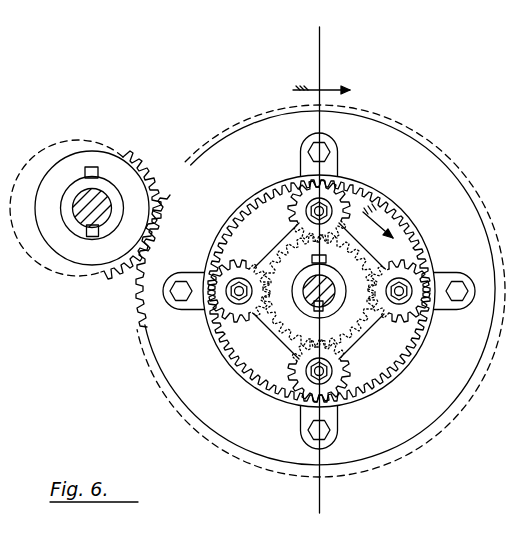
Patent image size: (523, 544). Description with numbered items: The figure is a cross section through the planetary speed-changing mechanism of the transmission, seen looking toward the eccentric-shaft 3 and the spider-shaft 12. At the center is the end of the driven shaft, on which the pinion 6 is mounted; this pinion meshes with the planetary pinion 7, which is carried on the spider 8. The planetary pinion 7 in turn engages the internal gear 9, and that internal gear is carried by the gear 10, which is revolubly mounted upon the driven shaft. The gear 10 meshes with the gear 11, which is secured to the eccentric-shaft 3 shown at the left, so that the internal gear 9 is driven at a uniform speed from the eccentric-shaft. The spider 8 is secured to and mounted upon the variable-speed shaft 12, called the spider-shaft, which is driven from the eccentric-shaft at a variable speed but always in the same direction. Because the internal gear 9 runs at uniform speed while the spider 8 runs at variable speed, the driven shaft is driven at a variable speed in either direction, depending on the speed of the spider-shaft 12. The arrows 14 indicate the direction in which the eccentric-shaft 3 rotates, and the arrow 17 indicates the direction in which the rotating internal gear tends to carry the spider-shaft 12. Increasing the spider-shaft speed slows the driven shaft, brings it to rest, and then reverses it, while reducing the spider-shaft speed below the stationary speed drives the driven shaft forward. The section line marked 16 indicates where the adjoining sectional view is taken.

The eccentric-shaft 3 is at (98, 190).
The pinion 6 is at (295, 332).
The planetary pinion 7 is at (334, 381).
The spider 8 is at (296, 237).
The internal gear 9 is at (430, 242).
The gear 10 is at (388, 137).
The gear 11 is at (128, 177).
The variable-speed shaft 12 is at (332, 299).
The arrows 14 is at (73, 136).
The direction arrow 16 is at (321, 77).
The arrow 17 is at (372, 220).